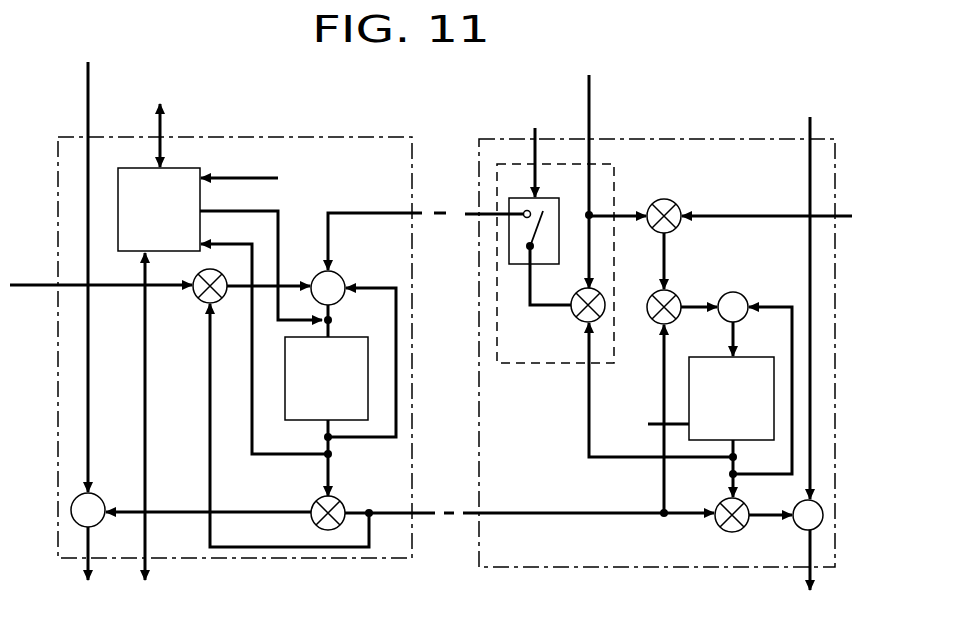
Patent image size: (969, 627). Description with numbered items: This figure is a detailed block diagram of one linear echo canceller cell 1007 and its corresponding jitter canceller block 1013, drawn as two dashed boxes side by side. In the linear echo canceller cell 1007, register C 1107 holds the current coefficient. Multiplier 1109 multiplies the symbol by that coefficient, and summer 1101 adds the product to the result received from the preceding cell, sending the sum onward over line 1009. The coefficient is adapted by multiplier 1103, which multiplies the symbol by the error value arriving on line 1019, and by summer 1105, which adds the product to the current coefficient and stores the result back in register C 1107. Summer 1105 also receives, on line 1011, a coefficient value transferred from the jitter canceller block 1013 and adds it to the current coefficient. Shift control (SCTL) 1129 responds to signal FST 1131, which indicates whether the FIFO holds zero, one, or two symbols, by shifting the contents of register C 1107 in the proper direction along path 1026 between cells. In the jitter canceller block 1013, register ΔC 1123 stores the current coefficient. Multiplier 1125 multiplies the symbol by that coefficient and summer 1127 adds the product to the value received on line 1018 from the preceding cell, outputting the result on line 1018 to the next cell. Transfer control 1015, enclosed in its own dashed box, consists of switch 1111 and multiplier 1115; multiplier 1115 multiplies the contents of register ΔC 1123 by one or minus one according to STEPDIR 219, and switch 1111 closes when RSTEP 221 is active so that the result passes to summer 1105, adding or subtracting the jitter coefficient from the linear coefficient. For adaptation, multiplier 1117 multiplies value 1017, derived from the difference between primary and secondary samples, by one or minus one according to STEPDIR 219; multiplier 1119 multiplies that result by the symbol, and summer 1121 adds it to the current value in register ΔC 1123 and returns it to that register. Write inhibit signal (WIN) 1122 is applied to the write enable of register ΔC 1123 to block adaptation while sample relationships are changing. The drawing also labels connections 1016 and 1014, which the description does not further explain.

The linear echo canceller cell 1007 is at (390, 137).
The jitter canceller block 1013 is at (568, 540).
The transfer control 1015 is at (532, 356).
The shift control (SCTL) 1129 is at (220, 244).
The register C 1107 is at (298, 370).
The register ΔC 1123 is at (690, 402).
The switch 1111 is at (512, 243).
The multiplier 1103 is at (263, 408).
The summer 1105 is at (348, 281).
The multiplier 1109 is at (242, 506).
The summer 1101 is at (103, 499).
The multiplier 1115 is at (570, 316).
The multiplier 1117 is at (666, 230).
The multiplier 1119 is at (682, 390).
The summer 1121 is at (749, 294).
The multiplier 1125 is at (733, 525).
The summer 1127 is at (787, 526).
The line 1009 is at (87, 324).
The path 1026 is at (161, 345).
The signal FST 1131 is at (265, 174).
The line 1019 is at (101, 271).
The line 1011 is at (387, 223).
The STEPDIR 219 is at (601, 157).
The RSTEP 221 is at (534, 137).
The line 1018 is at (808, 350).
The value 1017 is at (767, 201).
The write inhibit signal (WIN) 1122 is at (648, 417).
The signal 1016 is at (529, 499).
The signal 1014 is at (447, 520).